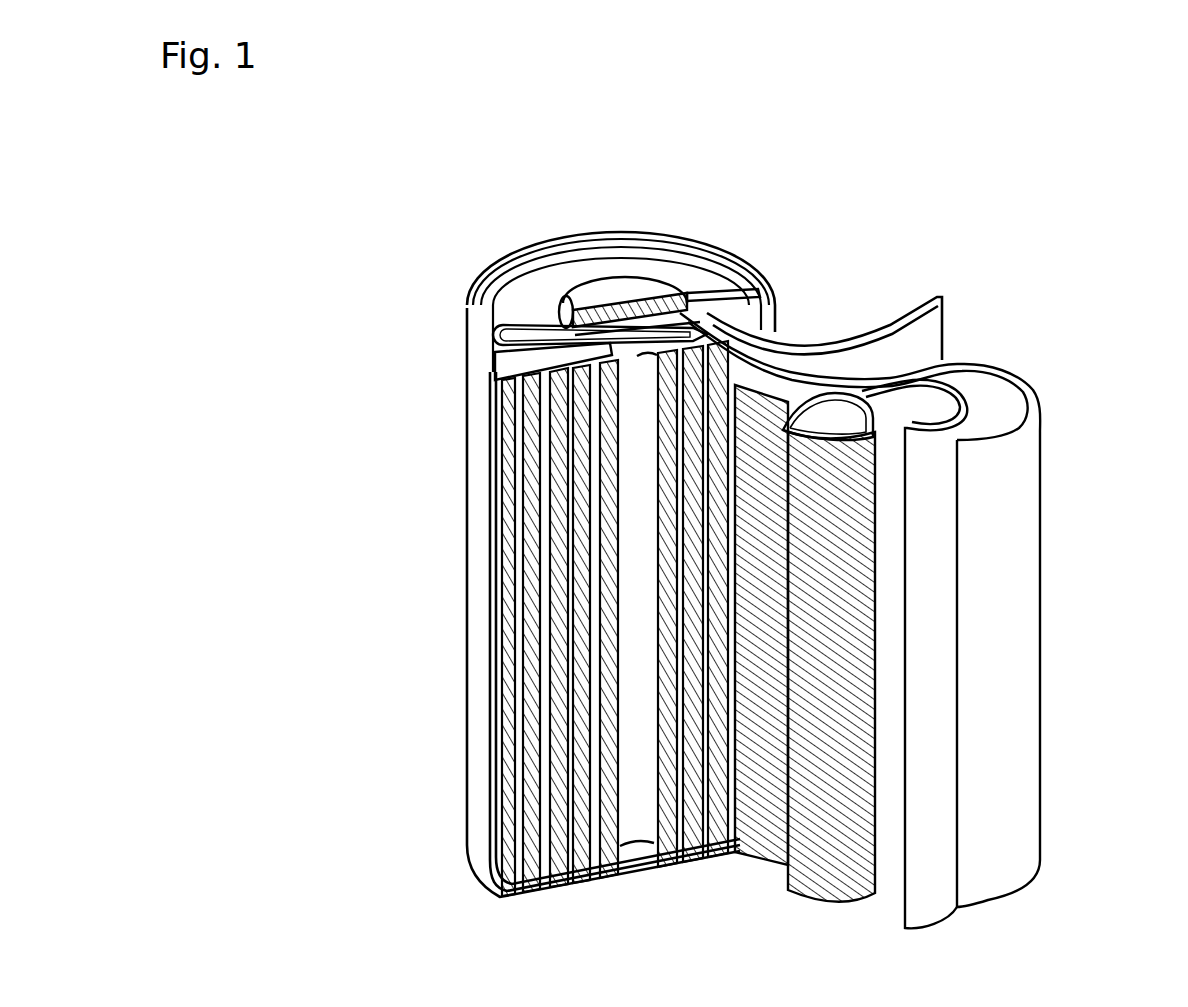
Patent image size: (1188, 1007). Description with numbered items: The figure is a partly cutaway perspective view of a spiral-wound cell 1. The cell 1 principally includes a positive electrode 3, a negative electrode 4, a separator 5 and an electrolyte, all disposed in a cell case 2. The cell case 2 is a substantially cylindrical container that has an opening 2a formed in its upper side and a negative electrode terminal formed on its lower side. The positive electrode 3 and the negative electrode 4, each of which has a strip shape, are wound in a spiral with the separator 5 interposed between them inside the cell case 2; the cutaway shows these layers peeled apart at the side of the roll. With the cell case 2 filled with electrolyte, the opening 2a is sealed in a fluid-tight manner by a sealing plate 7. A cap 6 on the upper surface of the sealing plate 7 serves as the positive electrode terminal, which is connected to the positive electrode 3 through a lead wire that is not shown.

The spiral-wound cell 1 is at (893, 277).
The cell case 2 is at (483, 537).
The opening 2a is at (527, 310).
The positive electrode 3 is at (833, 688).
The negative electrode 4 is at (1003, 533).
The separator 5 is at (930, 607).
The cap 6 is at (618, 290).
The sealing plate 7 is at (742, 247).